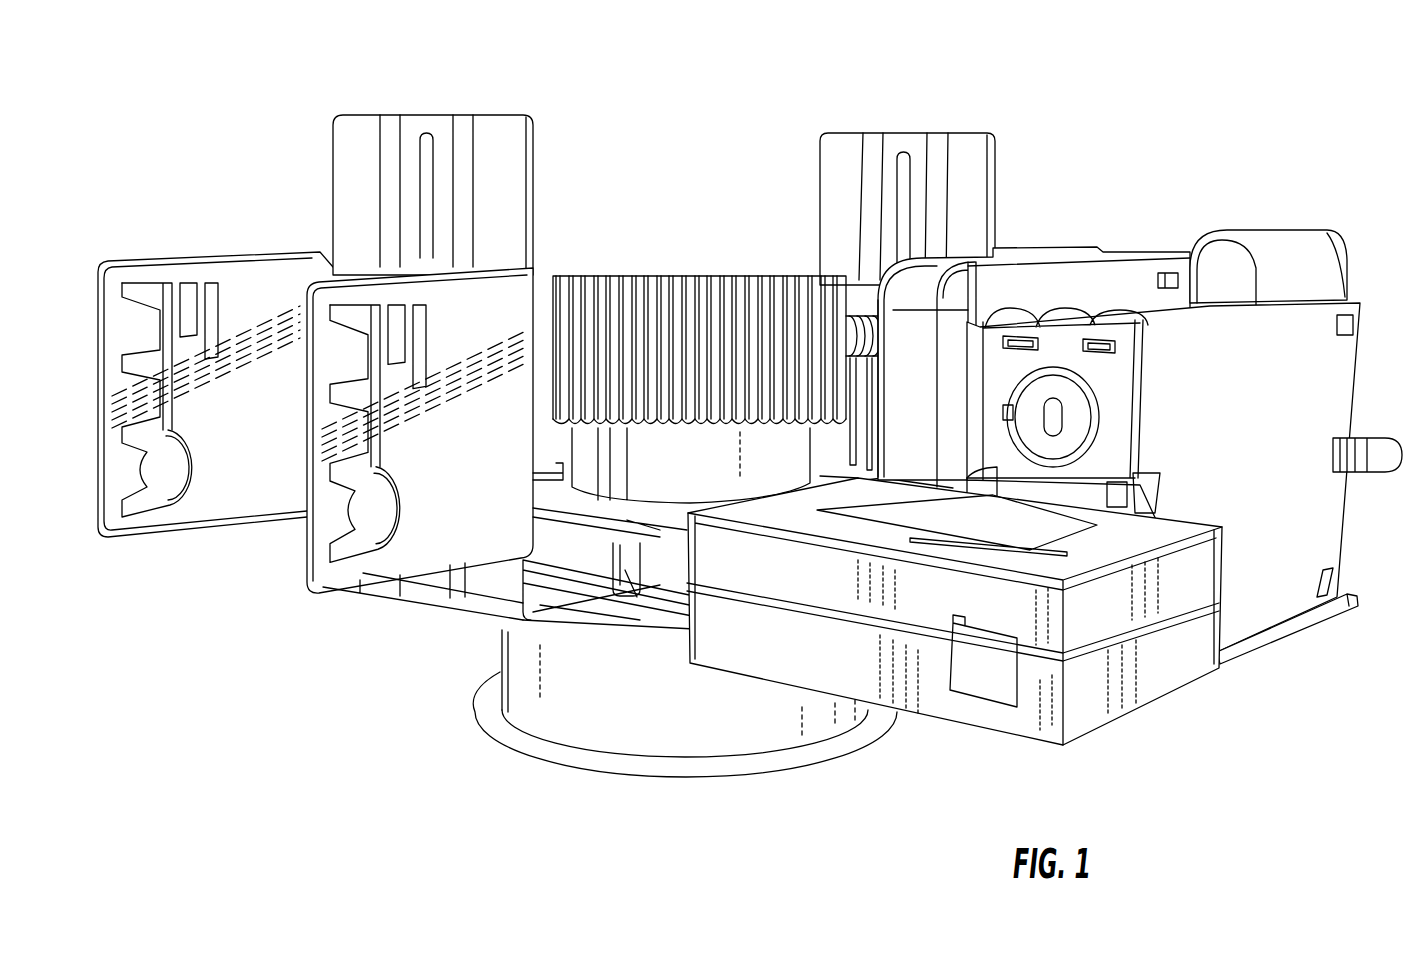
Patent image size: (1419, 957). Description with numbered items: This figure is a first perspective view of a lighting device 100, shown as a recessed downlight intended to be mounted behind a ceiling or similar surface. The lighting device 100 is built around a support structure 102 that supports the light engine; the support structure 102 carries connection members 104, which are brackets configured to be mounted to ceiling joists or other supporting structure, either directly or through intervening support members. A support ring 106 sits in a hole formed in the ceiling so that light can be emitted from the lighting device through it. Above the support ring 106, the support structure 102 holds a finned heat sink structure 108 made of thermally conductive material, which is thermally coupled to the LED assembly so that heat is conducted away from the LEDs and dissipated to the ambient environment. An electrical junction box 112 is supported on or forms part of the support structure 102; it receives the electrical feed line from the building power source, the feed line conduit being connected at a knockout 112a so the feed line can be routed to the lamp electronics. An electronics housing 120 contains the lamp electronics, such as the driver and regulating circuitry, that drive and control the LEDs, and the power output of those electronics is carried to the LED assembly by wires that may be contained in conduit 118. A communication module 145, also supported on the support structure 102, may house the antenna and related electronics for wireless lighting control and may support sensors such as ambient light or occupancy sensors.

The lighting device 100 is at (1264, 116).
The support structure 102 is at (620, 510).
The connection members 104 is at (505, 163).
The support ring 106 is at (672, 732).
The heat sink structure 108 is at (752, 270).
The electrical junction box 112 is at (1297, 408).
The knockout 112a is at (1075, 415).
The conduit 118 is at (868, 314).
The electronics housing 120 is at (1128, 272).
The communication module 145 is at (1166, 605).